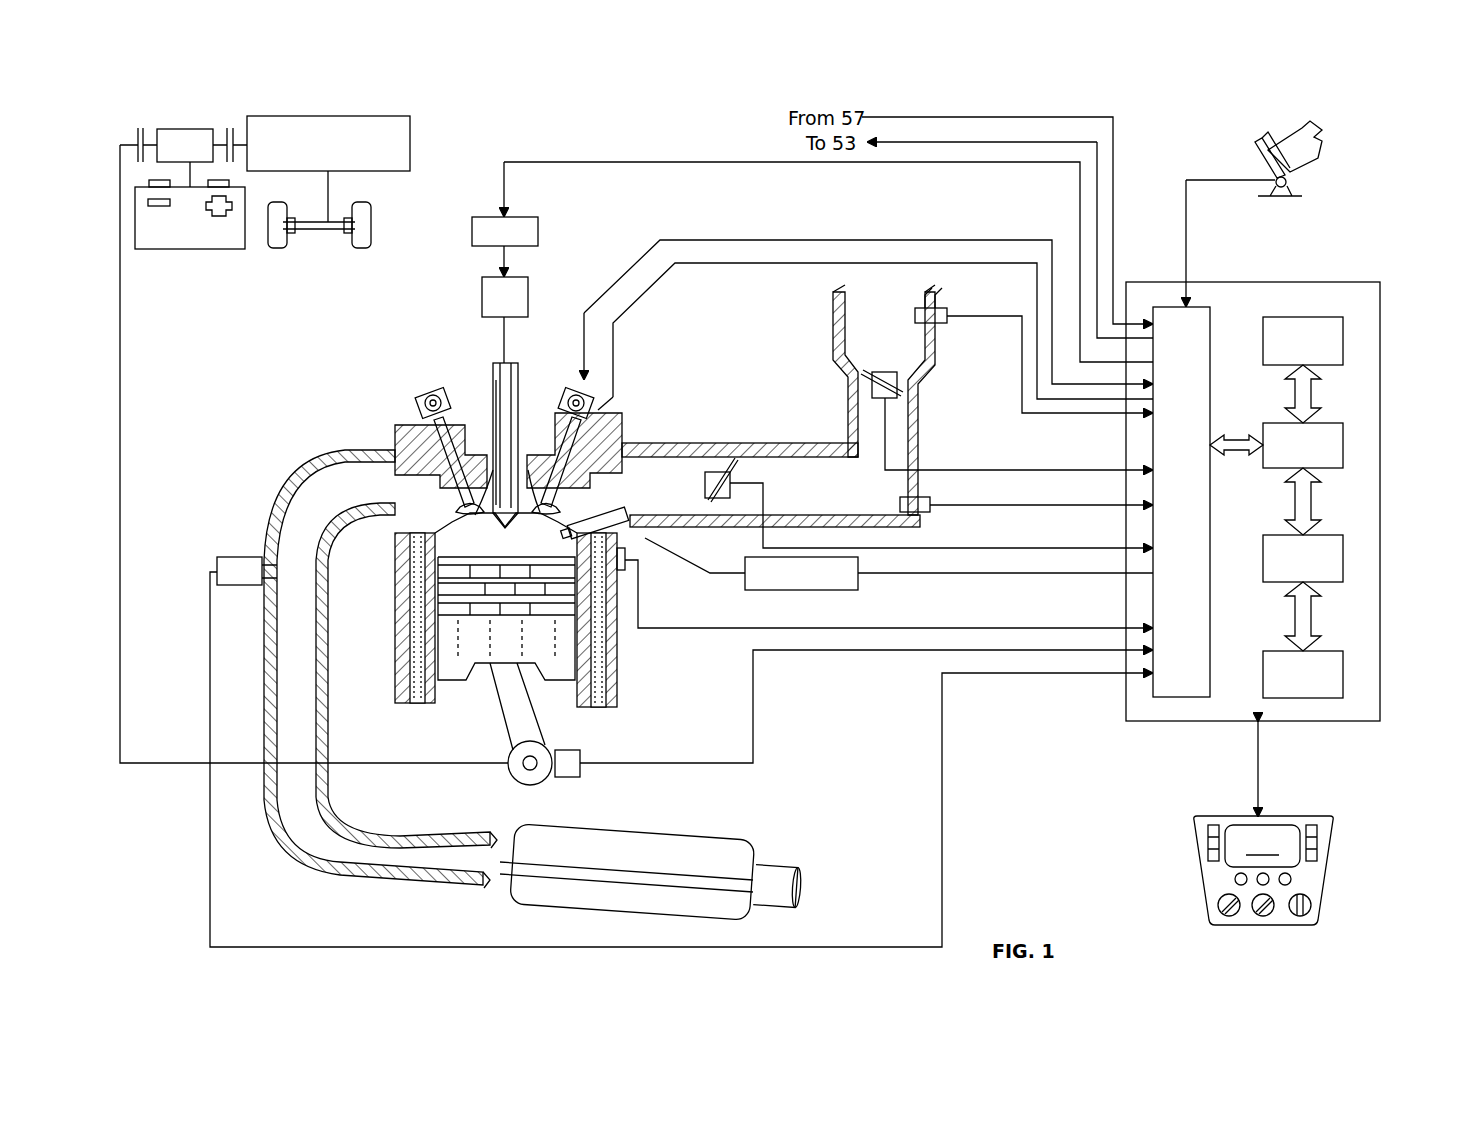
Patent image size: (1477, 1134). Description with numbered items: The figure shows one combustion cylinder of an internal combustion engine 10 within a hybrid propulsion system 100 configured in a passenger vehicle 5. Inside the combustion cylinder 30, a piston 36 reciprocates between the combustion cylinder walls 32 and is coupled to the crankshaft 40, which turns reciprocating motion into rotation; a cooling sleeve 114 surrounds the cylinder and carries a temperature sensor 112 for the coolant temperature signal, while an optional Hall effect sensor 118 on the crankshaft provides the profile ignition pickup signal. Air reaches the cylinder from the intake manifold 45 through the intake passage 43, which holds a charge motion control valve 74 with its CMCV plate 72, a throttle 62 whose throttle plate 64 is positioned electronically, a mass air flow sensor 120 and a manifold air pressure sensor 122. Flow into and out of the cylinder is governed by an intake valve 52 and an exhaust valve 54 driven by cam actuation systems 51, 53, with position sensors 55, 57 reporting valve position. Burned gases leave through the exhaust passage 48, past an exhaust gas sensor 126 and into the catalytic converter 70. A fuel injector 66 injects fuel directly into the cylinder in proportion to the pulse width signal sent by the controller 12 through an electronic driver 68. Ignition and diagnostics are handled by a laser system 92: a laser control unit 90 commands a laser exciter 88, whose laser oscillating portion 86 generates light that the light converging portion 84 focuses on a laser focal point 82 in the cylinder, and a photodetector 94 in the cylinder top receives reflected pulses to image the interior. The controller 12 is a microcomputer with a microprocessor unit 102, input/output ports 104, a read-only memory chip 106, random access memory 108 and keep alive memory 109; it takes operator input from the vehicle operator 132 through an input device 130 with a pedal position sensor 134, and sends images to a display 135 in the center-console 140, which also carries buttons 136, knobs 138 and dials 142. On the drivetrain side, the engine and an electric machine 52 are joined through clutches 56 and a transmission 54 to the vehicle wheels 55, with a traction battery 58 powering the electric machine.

The vehicle 5 is at (446, 141).
The internal combustion engine 10 is at (322, 376).
The controller 12 is at (1380, 288).
The combustion cylinder 30 is at (440, 572).
The combustion cylinder walls 32 is at (435, 692).
The piston 36 is at (500, 660).
The crankshaft 40 is at (518, 783).
The intake passage 43 is at (892, 344).
The intake manifold 45 is at (820, 495).
The exhaust passage 48 is at (367, 507).
The cam actuation system 51 is at (575, 392).
The intake valve 52 is at (190, 128).
The cam actuation system 53 is at (440, 392).
The exhaust valve 54 is at (386, 173).
The position sensor 55 is at (365, 230).
The clutch 56 is at (137, 132).
The position sensor 57 is at (422, 408).
The traction battery 58 is at (182, 250).
The throttle 62 is at (900, 385).
The throttle plate 64 is at (857, 382).
The fuel injector 66 is at (622, 535).
The electronic driver 68 is at (772, 590).
The catalytic converter 70 is at (712, 838).
The CMCV plate 72 is at (710, 470).
The charge motion control valve 74 is at (738, 456).
The laser focal point 82 is at (470, 565).
The light converging portion 84 is at (520, 505).
The laser oscillating portion 86 is at (505, 297).
The laser exciter 88 is at (512, 364).
The laser control unit 90 is at (505, 231).
The laser system 92 is at (552, 222).
The photodetector 94 is at (495, 395).
The hybrid propulsion system 100 is at (1423, 132).
The microprocessor unit 102 is at (1345, 448).
The input/output ports 104 is at (1215, 320).
The read-only memory chip 106 is at (1345, 342).
The random access memory 108 is at (1345, 560).
The keep alive memory 109 is at (1345, 675).
The temperature sensor 112 is at (626, 572).
The cooling sleeve 114 is at (600, 650).
The Hall effect sensor 118 is at (570, 777).
The mass air flow sensor 120 is at (940, 305).
The manifold air pressure sensor 122 is at (928, 513).
The exhaust gas sensor 126 is at (250, 556).
The input device 130 is at (1256, 152).
The vehicle operator 132 is at (1306, 140).
The pedal position sensor 134 is at (1300, 186).
The display 135 is at (1262, 846).
The buttons 136 is at (1208, 836).
The knobs 138 is at (1292, 882).
The center-console 140 is at (1338, 812).
The dials 142 is at (1312, 908).